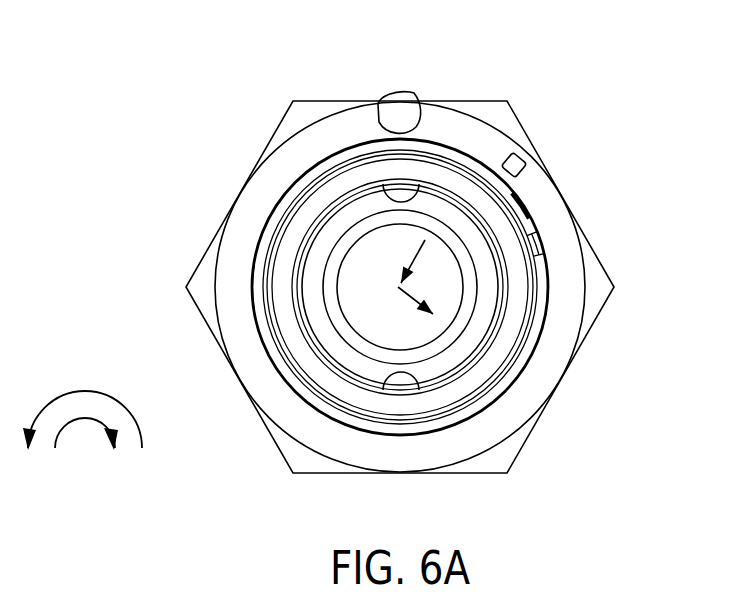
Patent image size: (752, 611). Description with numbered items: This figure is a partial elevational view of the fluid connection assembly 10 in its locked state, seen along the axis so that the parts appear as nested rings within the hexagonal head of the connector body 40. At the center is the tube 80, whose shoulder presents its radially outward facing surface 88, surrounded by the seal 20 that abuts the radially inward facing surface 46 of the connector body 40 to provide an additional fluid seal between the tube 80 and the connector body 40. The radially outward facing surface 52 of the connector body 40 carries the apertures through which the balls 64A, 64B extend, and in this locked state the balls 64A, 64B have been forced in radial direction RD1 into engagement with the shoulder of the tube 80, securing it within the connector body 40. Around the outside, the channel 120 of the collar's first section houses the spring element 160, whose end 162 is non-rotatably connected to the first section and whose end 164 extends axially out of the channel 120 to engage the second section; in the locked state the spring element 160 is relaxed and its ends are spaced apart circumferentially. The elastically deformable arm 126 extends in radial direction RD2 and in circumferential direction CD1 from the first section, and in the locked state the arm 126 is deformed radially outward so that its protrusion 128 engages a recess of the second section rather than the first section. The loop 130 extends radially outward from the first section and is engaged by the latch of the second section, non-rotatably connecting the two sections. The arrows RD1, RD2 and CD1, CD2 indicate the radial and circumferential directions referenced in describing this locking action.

The fluid connection assembly 10 is at (222, 76).
The seal 20 is at (498, 285).
The connector body 40 is at (493, 113).
The radially inward facing surface 46 is at (488, 358).
The radially outward facing surface 52 is at (478, 390).
The ball 64A is at (402, 190).
The ball 64B is at (392, 385).
The tube 80 is at (330, 297).
The radially outward facing surface 88 is at (327, 240).
The channel 120 is at (558, 337).
The arm 126 is at (343, 133).
The protrusion 128 is at (395, 108).
The loop 130 is at (520, 165).
The spring element 160 is at (530, 340).
The end 162 is at (523, 205).
The end 164 is at (540, 240).
The radial direction RD1 is at (413, 248).
The radial direction RD2 is at (405, 305).
The circumferential direction CD1 is at (65, 433).
The circumferential direction CD2 is at (68, 392).